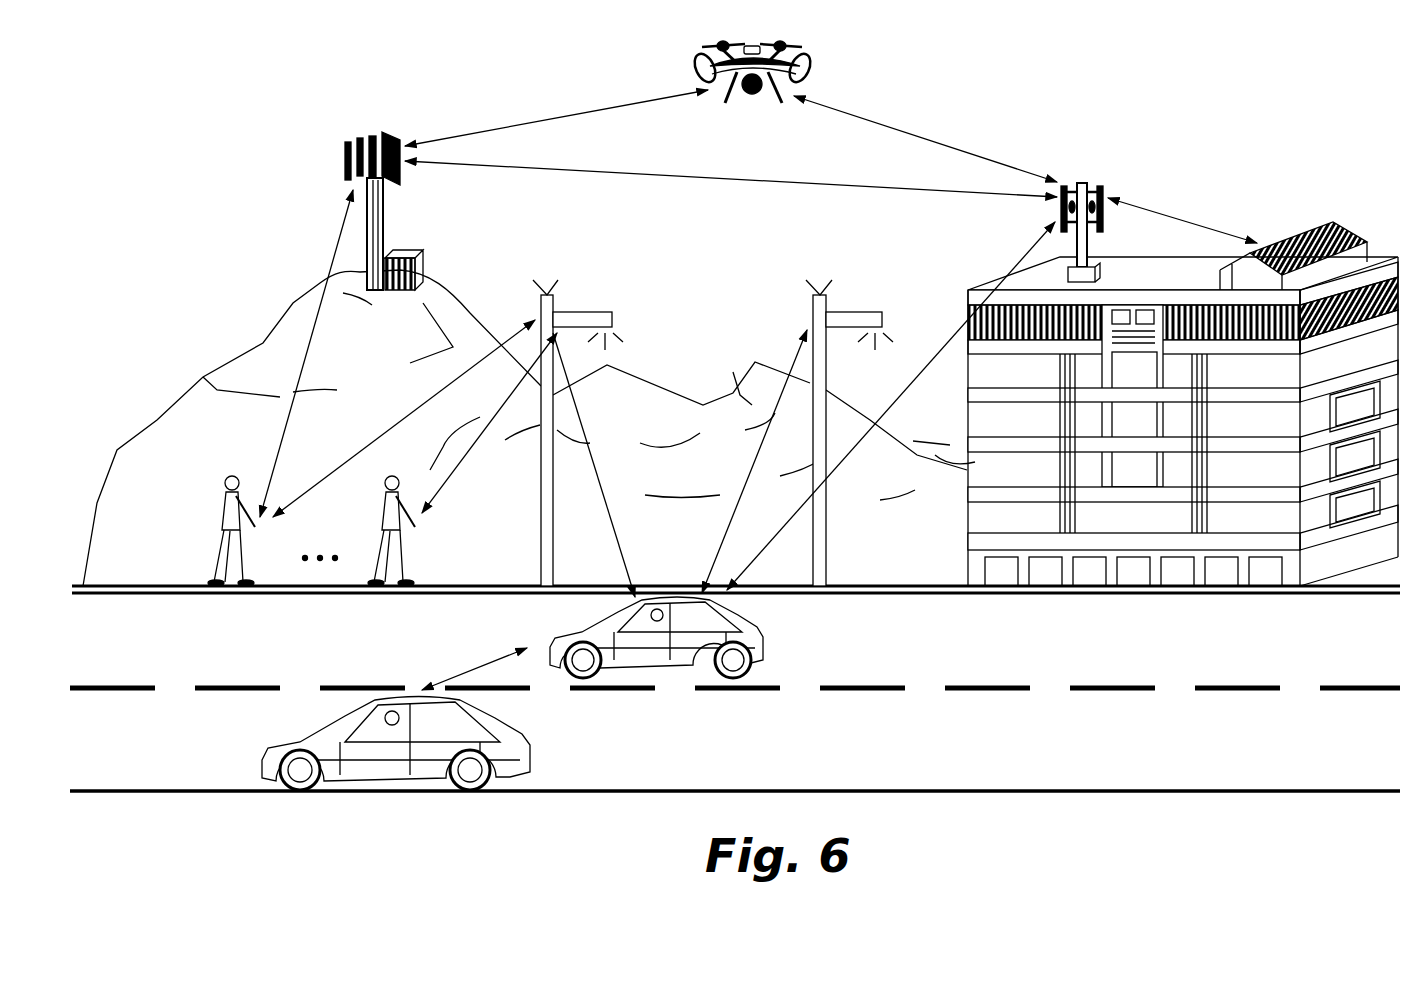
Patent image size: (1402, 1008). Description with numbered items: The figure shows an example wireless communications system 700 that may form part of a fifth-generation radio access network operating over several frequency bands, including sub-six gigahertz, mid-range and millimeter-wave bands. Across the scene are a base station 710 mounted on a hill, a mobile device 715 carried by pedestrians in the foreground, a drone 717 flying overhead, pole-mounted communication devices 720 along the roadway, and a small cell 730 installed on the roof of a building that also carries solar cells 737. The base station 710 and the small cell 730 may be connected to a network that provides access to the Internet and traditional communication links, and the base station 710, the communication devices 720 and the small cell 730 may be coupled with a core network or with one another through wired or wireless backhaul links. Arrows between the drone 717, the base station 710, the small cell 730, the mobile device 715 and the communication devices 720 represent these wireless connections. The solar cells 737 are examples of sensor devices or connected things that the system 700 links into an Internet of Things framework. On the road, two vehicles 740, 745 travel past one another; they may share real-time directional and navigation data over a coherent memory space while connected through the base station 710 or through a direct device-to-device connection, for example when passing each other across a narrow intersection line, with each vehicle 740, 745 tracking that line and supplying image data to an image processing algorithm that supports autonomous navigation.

The wireless communications system 700 is at (283, 86).
The base station 710 is at (396, 140).
The mobile device 715 is at (258, 526).
The drone 717 is at (808, 72).
The communication device 720 is at (550, 300).
The small cell 730 is at (1100, 186).
The solar cell 737 is at (1330, 222).
The vehicle 740 is at (380, 697).
The vehicle 745 is at (660, 598).